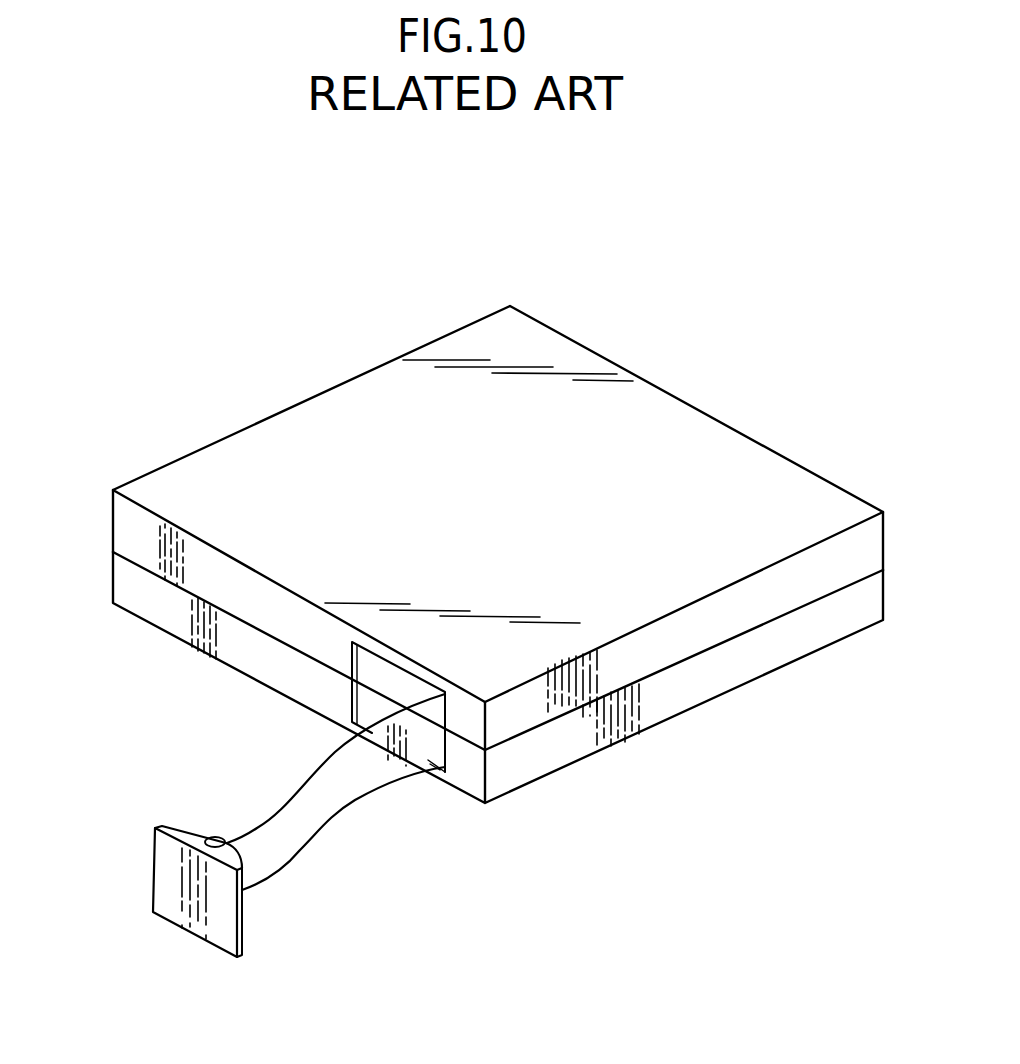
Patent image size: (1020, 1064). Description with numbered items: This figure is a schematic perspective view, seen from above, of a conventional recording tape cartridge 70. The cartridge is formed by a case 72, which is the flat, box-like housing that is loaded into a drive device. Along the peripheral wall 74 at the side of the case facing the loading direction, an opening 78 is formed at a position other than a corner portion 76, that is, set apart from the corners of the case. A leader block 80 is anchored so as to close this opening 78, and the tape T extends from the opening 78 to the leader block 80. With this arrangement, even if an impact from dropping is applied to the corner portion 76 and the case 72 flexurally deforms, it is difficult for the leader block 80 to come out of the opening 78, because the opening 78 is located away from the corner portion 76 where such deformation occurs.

The recording tape cartridge 70 is at (457, 597).
The case 72 is at (403, 390).
The peripheral wall 74 is at (157, 605).
The corner portion 76 is at (112, 530).
The opening 78 is at (347, 732).
The leader block 80 is at (168, 877).
The tape T is at (327, 802).